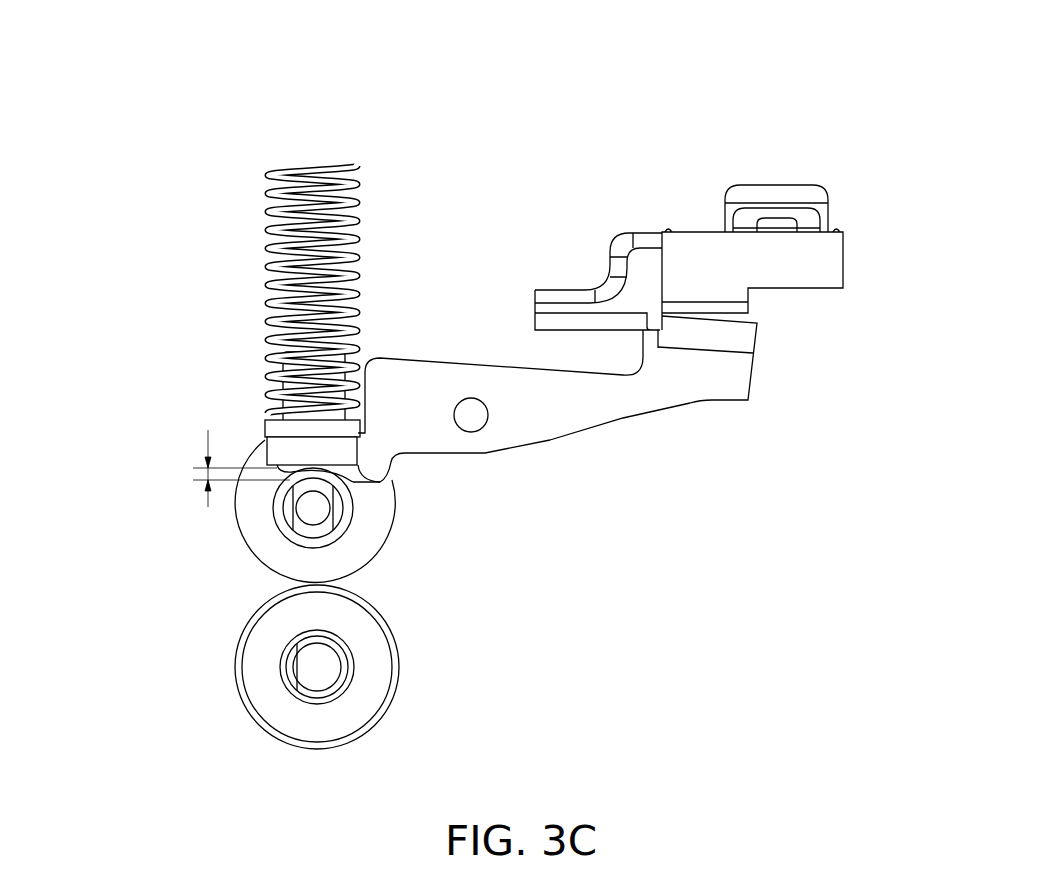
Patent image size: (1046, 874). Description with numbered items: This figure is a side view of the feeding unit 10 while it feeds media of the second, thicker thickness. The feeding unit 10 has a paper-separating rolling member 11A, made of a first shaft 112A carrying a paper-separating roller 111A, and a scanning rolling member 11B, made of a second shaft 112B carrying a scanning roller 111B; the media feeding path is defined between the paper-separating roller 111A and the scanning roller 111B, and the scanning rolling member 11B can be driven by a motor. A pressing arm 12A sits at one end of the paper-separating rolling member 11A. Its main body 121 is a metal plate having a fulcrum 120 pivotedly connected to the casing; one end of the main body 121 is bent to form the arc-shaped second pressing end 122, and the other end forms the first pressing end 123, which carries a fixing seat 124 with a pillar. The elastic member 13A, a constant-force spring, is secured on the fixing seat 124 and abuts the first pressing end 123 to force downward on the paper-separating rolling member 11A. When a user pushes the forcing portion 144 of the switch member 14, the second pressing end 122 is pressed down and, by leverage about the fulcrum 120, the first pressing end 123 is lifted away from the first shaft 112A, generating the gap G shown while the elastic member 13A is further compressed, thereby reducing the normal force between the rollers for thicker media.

The feeding unit 10 is at (232, 38).
The elastic member 13A is at (318, 177).
The switch member 14 is at (697, 183).
The forcing portion 144 is at (770, 195).
The pressing arm 12A is at (517, 450).
The fulcrum 120 is at (483, 306).
The main body 121 is at (562, 400).
The second pressing end 122 is at (705, 345).
The first pressing end 123 is at (360, 487).
The fixing seat 124 is at (290, 379).
The paper-separating rolling member 11A is at (238, 511).
The paper-separating roller 111A is at (265, 525).
The first shaft 112A is at (315, 517).
The scanning rolling member 11B is at (240, 667).
The scanning roller 111B is at (272, 655).
The second shaft 112B is at (318, 678).